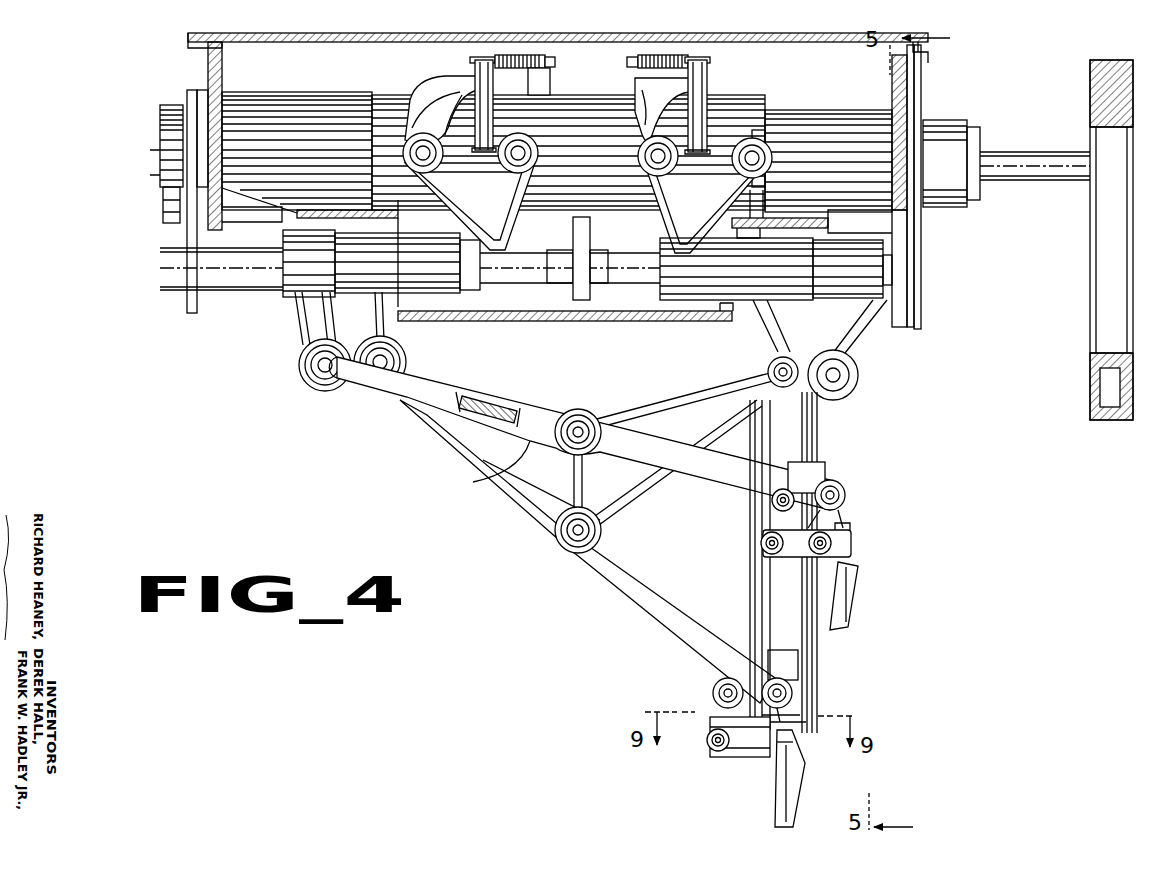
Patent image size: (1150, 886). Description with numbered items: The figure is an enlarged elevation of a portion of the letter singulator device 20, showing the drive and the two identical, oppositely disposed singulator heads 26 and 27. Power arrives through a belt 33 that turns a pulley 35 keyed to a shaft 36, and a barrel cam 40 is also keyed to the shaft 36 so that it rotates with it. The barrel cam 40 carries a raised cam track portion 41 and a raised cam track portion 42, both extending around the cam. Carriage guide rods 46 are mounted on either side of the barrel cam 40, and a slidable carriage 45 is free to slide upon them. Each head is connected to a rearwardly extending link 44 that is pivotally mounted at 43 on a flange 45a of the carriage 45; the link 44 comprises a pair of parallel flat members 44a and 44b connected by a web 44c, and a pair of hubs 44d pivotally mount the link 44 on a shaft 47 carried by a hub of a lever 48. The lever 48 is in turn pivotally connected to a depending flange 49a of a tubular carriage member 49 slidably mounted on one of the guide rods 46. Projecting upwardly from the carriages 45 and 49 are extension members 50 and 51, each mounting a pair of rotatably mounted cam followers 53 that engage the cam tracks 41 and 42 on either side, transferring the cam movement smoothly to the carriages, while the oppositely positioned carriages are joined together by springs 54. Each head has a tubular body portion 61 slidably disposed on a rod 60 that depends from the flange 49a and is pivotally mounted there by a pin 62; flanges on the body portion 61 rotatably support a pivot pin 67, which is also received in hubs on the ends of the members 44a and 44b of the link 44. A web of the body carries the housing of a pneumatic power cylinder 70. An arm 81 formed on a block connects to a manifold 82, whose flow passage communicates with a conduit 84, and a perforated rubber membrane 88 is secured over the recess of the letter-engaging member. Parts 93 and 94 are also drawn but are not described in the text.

The letter singulator device 20 is at (120, 80).
The singulator head 26 is at (710, 687).
The singulator head 27 is at (860, 524).
The belt 33 is at (1090, 350).
The pulley 35 is at (1090, 258).
The shaft 36 is at (1057, 180).
The barrel cam 40 is at (378, 92).
The raised cam track portion 41 is at (678, 98).
The raised cam track portion 42 is at (443, 78).
The pivot 43 is at (330, 372).
The link 44 is at (497, 490).
The flat member 44a is at (426, 418).
The flat member 44b is at (503, 397).
The web 44c is at (477, 392).
The hubs 44d is at (577, 413).
The slidable carriage 45 is at (320, 288).
The flange 45a is at (299, 347).
The carriage guide rods 46 is at (562, 237).
The shaft 47 is at (578, 516).
The lever 48 is at (698, 437).
The tubular carriage member 49 is at (757, 306).
The depending flange 49a is at (853, 368).
The extension member 50 is at (470, 155).
The extension member 51 is at (705, 156).
The cam followers 53 is at (402, 152).
The springs 54 is at (627, 72).
The rod 60 is at (800, 575).
The tubular body portion 61 is at (823, 462).
The pin 62 is at (765, 370).
The pivot pin 67 is at (833, 486).
The pneumatic power cylinder 70 is at (745, 757).
The arm 81 is at (853, 539).
The manifold 82 is at (840, 577).
The conduit 84 is at (800, 708).
The perforated rubber membrane 88 is at (855, 600).
The bracket 93 is at (163, 205).
The hub 94 is at (160, 132).